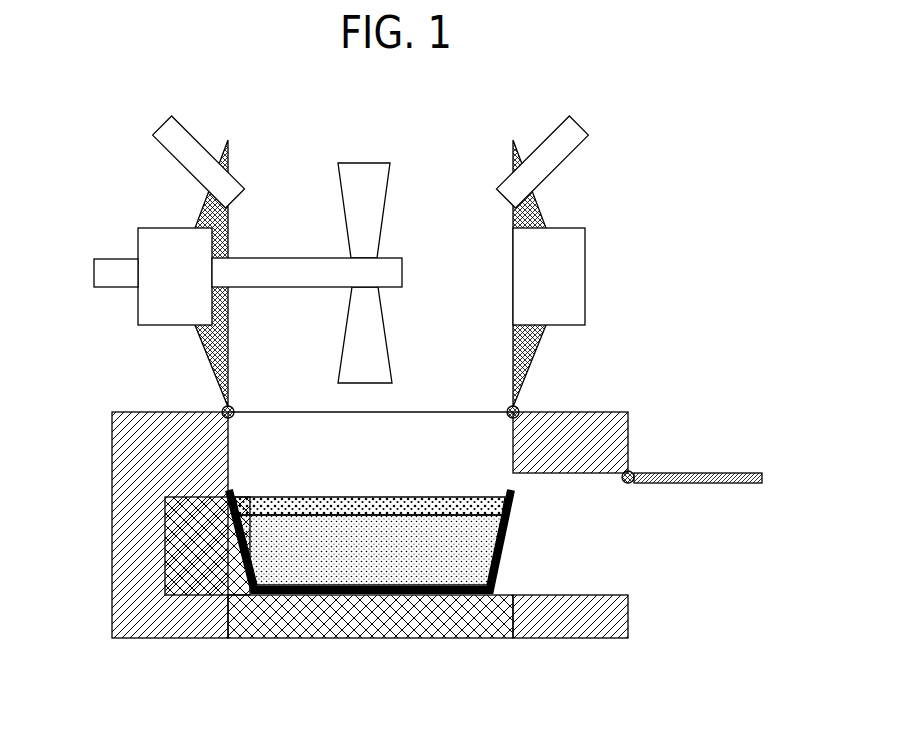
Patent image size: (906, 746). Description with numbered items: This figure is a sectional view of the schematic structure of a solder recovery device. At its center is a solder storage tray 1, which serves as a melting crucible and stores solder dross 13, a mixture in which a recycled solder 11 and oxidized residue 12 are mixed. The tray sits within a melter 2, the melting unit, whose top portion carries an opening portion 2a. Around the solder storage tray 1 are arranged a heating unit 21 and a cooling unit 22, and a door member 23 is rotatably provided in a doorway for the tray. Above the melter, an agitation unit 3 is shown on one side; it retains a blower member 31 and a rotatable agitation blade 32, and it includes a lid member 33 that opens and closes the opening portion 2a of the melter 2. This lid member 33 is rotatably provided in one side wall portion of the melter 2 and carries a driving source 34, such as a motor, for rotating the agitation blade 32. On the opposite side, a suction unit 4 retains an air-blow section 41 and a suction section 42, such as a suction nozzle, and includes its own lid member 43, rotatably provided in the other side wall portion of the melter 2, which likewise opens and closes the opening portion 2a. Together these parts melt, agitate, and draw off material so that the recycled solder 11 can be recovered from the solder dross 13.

The solder storage tray 1 is at (517, 530).
The melter 2 is at (398, 526).
The opening portion 2a is at (298, 410).
The agitation unit 3 is at (158, 243).
The suction unit 4 is at (578, 243).
The recycled solder 11 is at (390, 555).
The oxidized residue 12 is at (427, 505).
The solder dross 13 is at (370, 614).
The heating unit 21 is at (275, 639).
The cooling unit 22 is at (183, 535).
The door member 23 is at (683, 472).
The blower member 31 is at (162, 122).
The agitation blade 32 is at (365, 162).
The lid member 33 is at (200, 343).
The driving source 34 is at (138, 305).
The air-blow section 41 is at (575, 118).
The suction section 42 is at (585, 275).
The lid member 43 is at (545, 345).